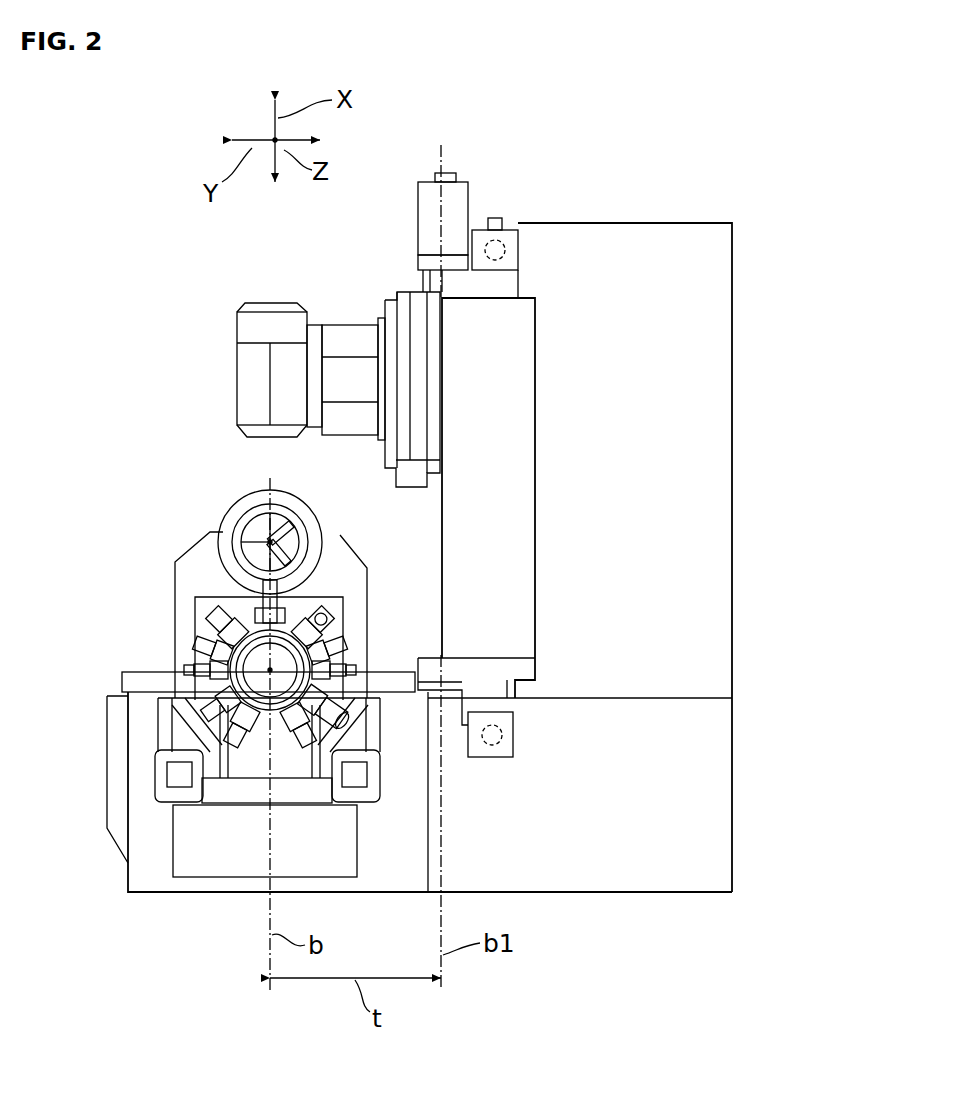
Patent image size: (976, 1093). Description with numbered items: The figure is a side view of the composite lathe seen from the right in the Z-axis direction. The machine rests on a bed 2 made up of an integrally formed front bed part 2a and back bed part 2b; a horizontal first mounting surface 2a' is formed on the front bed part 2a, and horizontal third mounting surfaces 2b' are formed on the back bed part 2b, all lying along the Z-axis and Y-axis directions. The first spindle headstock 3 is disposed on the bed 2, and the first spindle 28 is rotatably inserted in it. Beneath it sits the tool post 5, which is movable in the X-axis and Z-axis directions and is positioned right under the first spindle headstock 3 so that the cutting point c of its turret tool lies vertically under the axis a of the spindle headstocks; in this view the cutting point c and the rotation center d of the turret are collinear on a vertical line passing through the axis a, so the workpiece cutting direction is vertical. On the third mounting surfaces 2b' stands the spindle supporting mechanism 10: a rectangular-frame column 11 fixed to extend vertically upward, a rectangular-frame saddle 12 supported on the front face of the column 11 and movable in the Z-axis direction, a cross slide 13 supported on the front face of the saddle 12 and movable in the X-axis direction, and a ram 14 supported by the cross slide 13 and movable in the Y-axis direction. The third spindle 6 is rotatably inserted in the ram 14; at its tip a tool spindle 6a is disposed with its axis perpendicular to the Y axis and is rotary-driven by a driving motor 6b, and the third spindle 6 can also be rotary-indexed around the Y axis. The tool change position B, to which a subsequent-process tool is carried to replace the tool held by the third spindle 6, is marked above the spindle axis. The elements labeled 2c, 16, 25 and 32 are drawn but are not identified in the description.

The bed 2 is at (427, 785).
The front bed part 2a is at (385, 792).
The first mounting surface 2a' is at (236, 662).
The back bed part 2b is at (623, 726).
The third mounting surfaces 2b' is at (741, 656).
The base lower box 2c is at (205, 877).
The first spindle headstock 3 is at (270, 522).
The tool post 5 is at (250, 640).
The third spindle 6 is at (229, 349).
The tool spindle 6a is at (242, 437).
The driving motor 6b is at (237, 370).
The spindle supporting mechanism 10 is at (688, 551).
The column 11 is at (737, 385).
The saddle 12 is at (537, 345).
The cross slide 13 is at (398, 292).
The ram 14 is at (356, 318).
The guide blocks 16 is at (497, 240).
The mounting block 25 is at (160, 798).
The first spindle 28 is at (300, 513).
The mounting block 32 is at (370, 800).
The axis of the first and second spindle headstocks a is at (293, 550).
The cutting point c is at (272, 578).
The rotation center of the turret d is at (273, 670).
The tool change position B is at (441, 160).